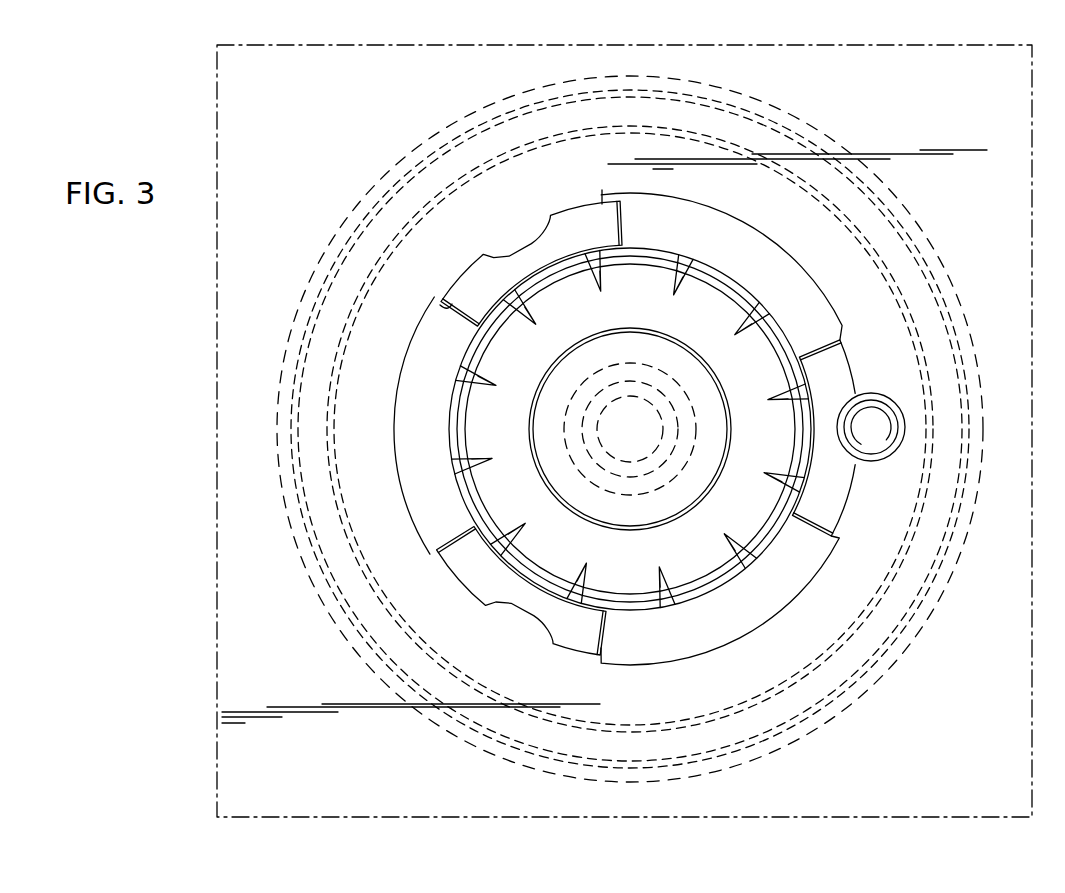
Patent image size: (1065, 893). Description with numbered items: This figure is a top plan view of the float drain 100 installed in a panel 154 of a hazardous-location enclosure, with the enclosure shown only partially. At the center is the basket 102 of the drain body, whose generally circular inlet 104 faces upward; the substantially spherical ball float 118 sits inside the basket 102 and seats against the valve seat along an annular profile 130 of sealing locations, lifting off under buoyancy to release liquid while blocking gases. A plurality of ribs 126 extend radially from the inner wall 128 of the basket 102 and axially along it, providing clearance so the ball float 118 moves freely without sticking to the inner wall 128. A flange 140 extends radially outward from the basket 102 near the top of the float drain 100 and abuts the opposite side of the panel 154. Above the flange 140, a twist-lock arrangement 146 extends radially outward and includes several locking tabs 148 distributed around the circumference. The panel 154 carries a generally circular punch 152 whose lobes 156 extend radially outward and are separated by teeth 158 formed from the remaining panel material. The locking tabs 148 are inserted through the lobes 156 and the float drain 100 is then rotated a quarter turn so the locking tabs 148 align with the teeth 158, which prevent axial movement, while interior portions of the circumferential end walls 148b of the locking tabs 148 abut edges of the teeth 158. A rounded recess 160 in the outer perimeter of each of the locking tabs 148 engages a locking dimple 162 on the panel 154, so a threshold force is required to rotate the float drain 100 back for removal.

The float drain 100 is at (562, 200).
The basket 102 is at (767, 370).
The inlet 104 is at (657, 293).
The ball float 118 is at (692, 345).
The ribs 126 is at (523, 524).
The inner wall 128 is at (777, 330).
The annular profile 130 is at (597, 393).
The flange 140 is at (317, 272).
The twist-lock arrangement 146 is at (455, 600).
The locking tabs 148 is at (580, 200).
The circumferential end walls 148b is at (623, 223).
The punch 152 is at (785, 615).
The panel 154 is at (1005, 680).
The lobes 156 is at (693, 230).
The teeth 158 is at (440, 305).
The rounded recess 160 is at (512, 235).
The locking dimple 162 is at (905, 425).